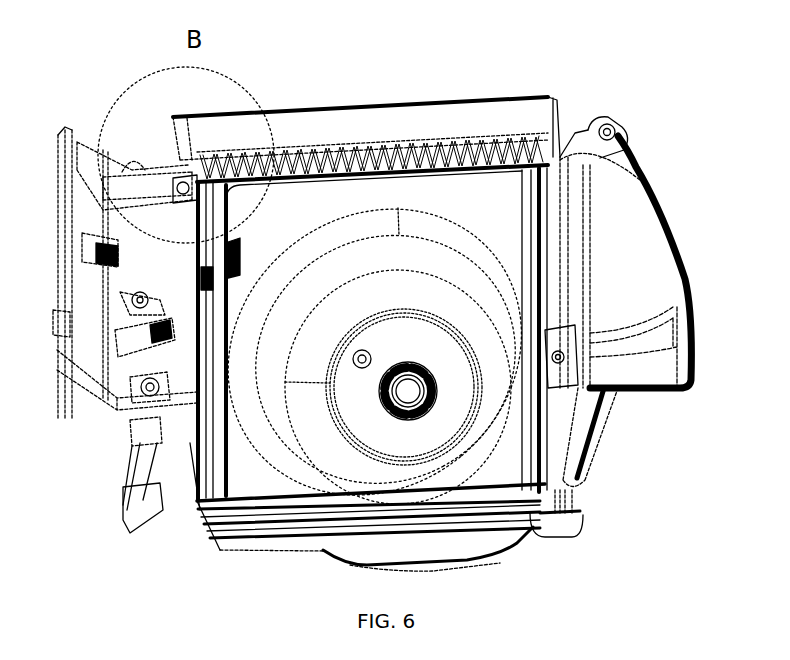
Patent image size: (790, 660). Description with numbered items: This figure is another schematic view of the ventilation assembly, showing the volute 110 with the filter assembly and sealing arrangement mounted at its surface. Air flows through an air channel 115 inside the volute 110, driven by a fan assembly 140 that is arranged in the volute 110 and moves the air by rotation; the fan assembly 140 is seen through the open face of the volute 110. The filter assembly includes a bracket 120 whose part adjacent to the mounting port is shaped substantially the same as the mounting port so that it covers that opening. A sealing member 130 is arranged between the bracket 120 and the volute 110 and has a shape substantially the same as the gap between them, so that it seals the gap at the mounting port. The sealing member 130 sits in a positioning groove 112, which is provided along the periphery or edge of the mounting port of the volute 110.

The volute 110 is at (423, 153).
The positioning groove 112 is at (187, 172).
The air channel 115 is at (452, 285).
The bracket 120 is at (332, 117).
The sealing member 130 is at (297, 147).
The fan assembly 140 is at (448, 377).